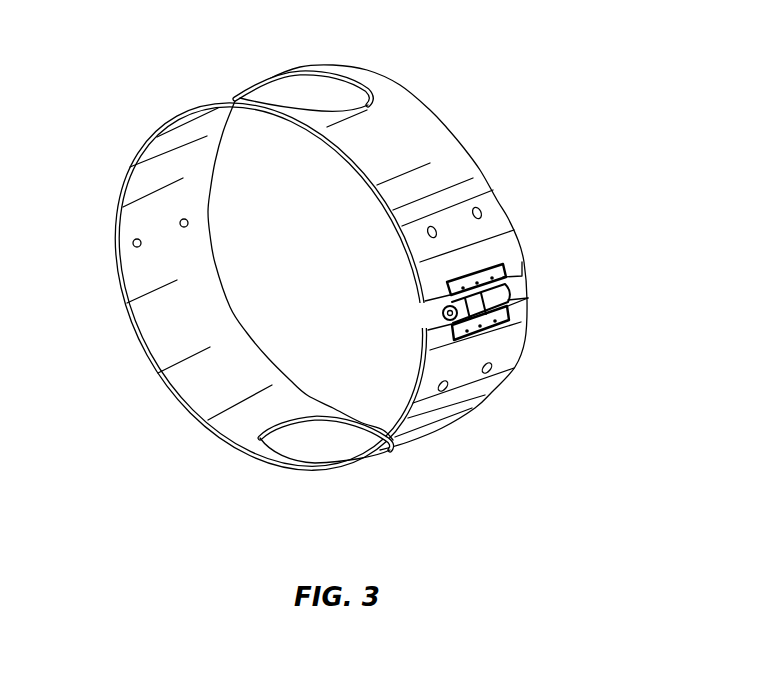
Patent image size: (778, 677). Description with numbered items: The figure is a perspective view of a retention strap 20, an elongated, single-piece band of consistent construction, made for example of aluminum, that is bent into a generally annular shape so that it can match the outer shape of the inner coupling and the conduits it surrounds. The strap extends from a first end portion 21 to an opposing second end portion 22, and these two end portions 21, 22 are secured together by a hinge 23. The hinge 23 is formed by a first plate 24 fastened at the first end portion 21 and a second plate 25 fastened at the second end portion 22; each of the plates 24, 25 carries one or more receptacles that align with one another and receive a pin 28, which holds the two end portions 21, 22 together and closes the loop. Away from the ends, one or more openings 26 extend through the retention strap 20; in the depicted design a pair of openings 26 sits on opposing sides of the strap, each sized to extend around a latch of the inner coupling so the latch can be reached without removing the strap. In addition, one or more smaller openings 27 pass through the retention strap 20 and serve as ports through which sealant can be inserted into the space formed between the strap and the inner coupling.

The retention strap 20 is at (165, 336).
The first end portion 21 is at (493, 281).
The second end portion 22 is at (523, 297).
The hinge 23 is at (513, 287).
The first plate 24 is at (471, 272).
The second plate 25 is at (470, 332).
The opening 26 is at (295, 90).
The smaller opening 27 is at (182, 230).
The pin 28 is at (443, 314).